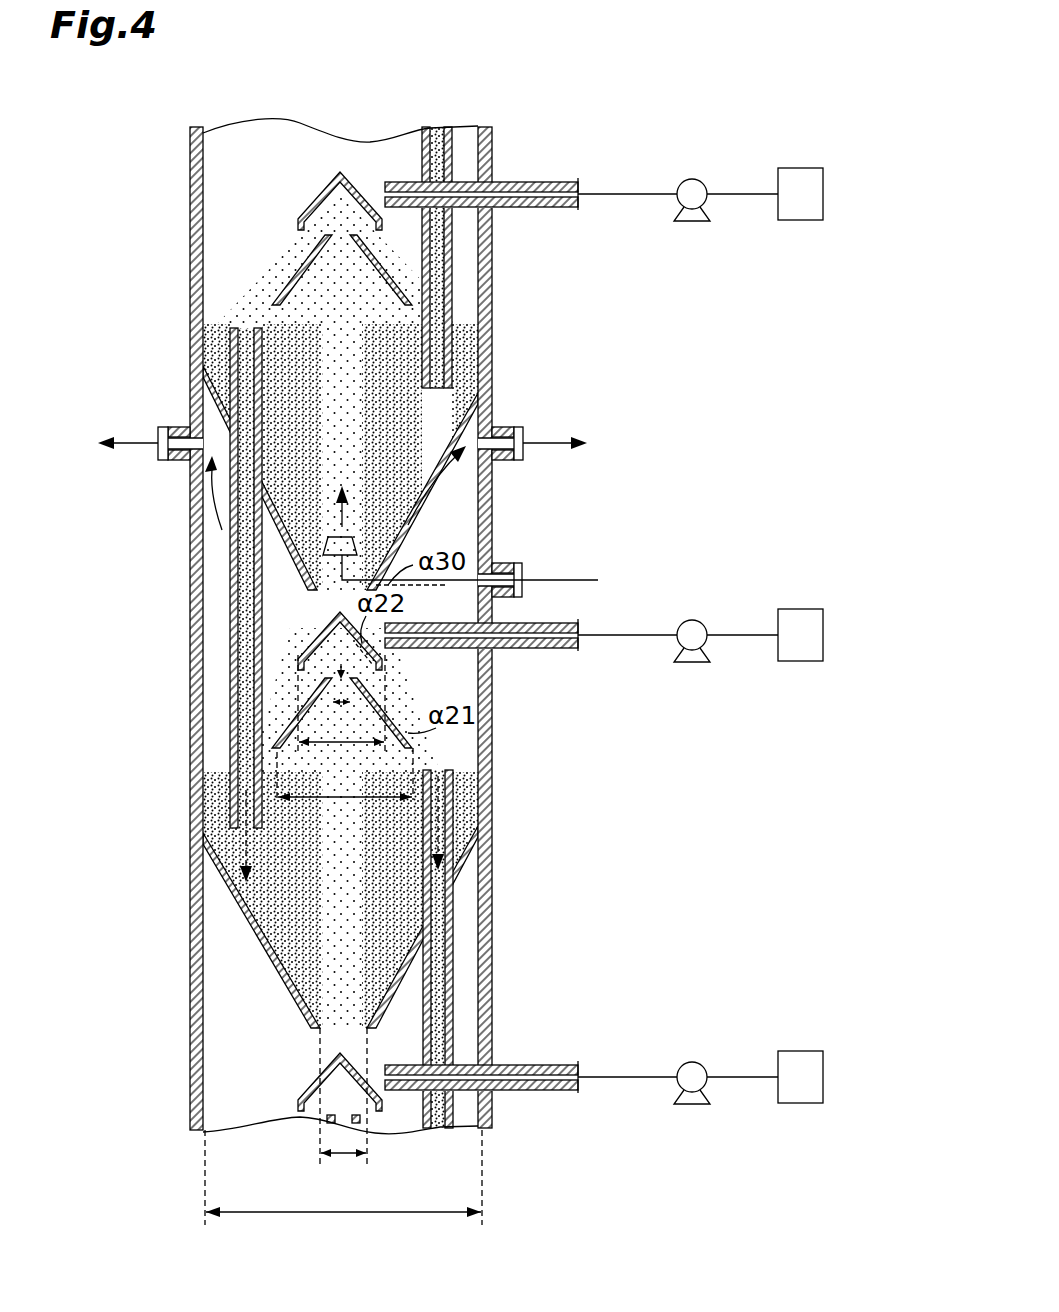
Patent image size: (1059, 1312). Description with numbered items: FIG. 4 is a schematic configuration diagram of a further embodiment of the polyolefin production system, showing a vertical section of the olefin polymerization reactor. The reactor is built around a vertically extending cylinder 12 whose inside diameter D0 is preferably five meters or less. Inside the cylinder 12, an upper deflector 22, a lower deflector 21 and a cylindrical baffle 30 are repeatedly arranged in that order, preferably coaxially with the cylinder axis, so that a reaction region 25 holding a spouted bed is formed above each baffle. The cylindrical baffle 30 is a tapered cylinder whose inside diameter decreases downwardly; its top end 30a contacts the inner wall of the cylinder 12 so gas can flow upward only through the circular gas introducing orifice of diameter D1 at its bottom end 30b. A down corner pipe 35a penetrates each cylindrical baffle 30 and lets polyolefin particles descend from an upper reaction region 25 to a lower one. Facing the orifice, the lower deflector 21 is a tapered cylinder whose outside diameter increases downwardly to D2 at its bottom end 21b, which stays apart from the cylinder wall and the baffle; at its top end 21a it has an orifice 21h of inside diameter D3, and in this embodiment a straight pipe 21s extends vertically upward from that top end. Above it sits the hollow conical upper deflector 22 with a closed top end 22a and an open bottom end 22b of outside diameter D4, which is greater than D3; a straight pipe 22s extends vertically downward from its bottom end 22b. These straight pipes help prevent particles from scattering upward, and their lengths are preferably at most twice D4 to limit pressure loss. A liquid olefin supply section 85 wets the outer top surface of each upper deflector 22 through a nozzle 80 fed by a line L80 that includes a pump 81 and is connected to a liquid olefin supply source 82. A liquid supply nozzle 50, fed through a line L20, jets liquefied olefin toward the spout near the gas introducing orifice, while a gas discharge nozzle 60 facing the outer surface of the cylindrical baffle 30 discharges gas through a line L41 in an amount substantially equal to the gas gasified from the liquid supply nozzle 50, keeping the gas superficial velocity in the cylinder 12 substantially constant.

The cylinder 12 is at (190, 165).
The lower deflector 21 is at (290, 286).
The top end of the lower deflector 21a is at (360, 683).
The bottom end of the lower deflector 21b is at (279, 752).
The orifice 21h is at (337, 675).
The straight pipe 21s is at (326, 680).
The upper deflector 22 is at (322, 182).
The top end of the upper deflector 22a is at (337, 614).
The bottom end of the upper deflector 22b is at (384, 678).
The straight pipe 22s is at (297, 668).
The reaction region 25 is at (466, 400).
The cylindrical baffle 30 is at (485, 540).
The top end of the cylindrical baffle 30a is at (213, 383).
The bottom end of the cylindrical baffle 30b is at (315, 590).
The down corner pipe 35a is at (448, 280).
The liquid supply nozzle 50 is at (328, 540).
The gas discharge nozzle 60 is at (173, 428).
The nozzle 80 is at (563, 208).
The pump 81 is at (693, 222).
The liquid olefin supply source 82 is at (798, 221).
The liquid olefin supply section 85 is at (622, 596).
The line L20 is at (577, 578).
The line L41 is at (565, 478).
The line L80 is at (742, 193).
The inside diameter of the cylinder D0 is at (343, 1188).
The diameter of the gas introducing orifice D1 is at (343, 1108).
The outside diameter at the bottom end of the lower deflector D2 is at (345, 788).
The inside diameter of the orifice D3 is at (339, 714).
The outside diameter at the bottom end of the upper deflector D4 is at (341, 714).